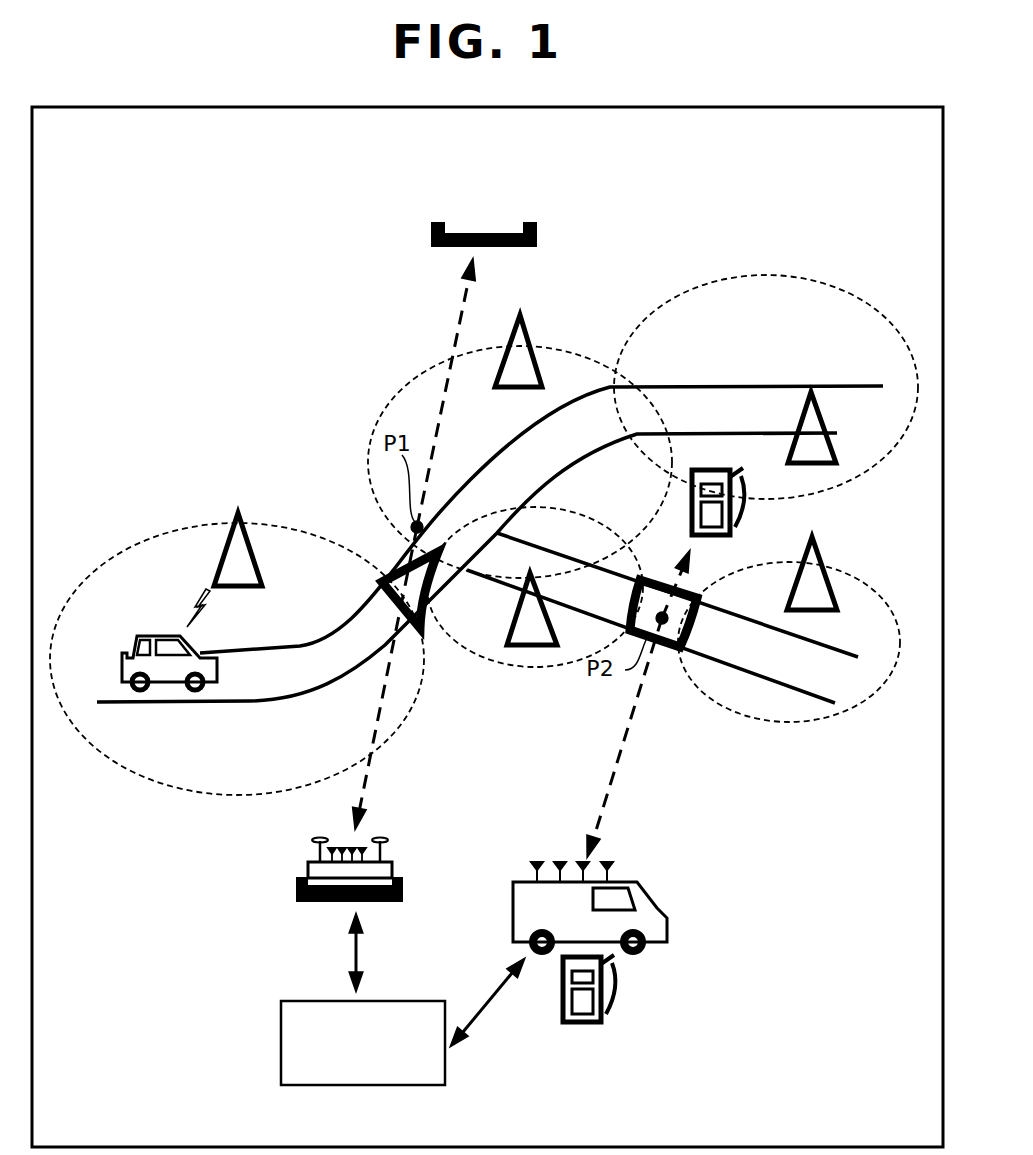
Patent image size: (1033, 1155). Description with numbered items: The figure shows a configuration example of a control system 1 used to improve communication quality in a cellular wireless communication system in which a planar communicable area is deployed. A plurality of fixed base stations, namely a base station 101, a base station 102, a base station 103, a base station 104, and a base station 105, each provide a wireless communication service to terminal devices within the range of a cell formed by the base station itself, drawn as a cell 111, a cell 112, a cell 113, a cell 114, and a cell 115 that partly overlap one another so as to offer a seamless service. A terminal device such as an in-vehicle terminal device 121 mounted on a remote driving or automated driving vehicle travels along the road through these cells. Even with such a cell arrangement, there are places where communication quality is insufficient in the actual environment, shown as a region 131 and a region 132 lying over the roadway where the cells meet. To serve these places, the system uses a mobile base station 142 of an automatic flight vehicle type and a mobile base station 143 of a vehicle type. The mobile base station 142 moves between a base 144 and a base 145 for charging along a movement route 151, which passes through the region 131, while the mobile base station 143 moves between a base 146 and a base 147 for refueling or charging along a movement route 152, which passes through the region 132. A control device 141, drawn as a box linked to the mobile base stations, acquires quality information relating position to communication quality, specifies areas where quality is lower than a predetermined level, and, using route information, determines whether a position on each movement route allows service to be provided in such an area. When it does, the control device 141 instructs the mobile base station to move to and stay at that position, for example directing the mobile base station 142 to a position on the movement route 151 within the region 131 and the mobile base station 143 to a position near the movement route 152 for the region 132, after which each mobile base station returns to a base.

The control system 1 is at (160, 208).
The base station 101 is at (222, 553).
The base station 102 is at (530, 337).
The base station 103 is at (800, 418).
The base station 104 is at (522, 650).
The base station 105 is at (827, 555).
The cell 111 is at (235, 800).
The cell 112 is at (383, 410).
The cell 113 is at (860, 295).
The cell 114 is at (487, 667).
The cell 115 is at (787, 724).
The in-vehicle terminal device 121 is at (217, 677).
The region 131 is at (397, 562).
The region 132 is at (688, 622).
The control device 141 is at (281, 1042).
The mobile base station 142 is at (392, 870).
The mobile base station 143 is at (670, 918).
The base 144 is at (296, 895).
The base 145 is at (487, 233).
The base 146 is at (610, 1005).
The base 147 is at (745, 517).
The movement route 151 is at (448, 328).
The movement route 152 is at (600, 808).